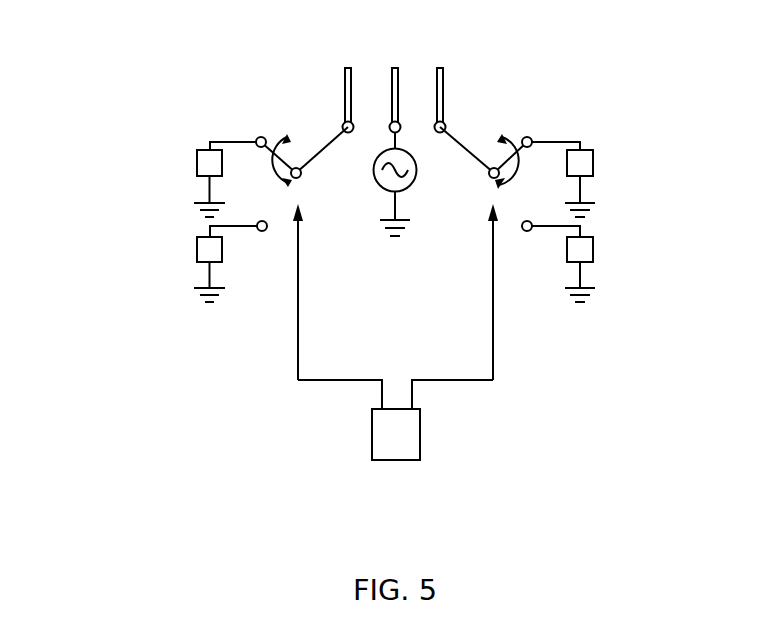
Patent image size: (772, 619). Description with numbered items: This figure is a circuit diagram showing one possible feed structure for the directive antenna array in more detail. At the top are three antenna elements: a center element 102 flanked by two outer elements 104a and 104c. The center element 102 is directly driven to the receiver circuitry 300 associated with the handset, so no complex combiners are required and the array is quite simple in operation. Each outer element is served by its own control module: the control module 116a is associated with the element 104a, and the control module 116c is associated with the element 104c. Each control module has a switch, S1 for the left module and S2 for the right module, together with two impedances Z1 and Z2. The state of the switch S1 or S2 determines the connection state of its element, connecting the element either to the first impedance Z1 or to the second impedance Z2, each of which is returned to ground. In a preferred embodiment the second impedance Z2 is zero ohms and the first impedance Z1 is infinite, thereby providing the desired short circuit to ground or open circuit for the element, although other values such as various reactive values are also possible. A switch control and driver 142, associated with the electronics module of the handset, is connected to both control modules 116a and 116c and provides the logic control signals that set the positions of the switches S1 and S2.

The center element 102 is at (398, 82).
The element 104a is at (344, 90).
The element 104c is at (445, 77).
The receiver circuitry 300 is at (410, 182).
The switch control and driver 142 is at (420, 438).
The control module 116a is at (199, 258).
The control module 116c is at (587, 257).
The switch S1 is at (302, 147).
The switch S2 is at (486, 147).
The first impedance Z1 is at (394, 181).
The second impedance Z2 is at (394, 267).